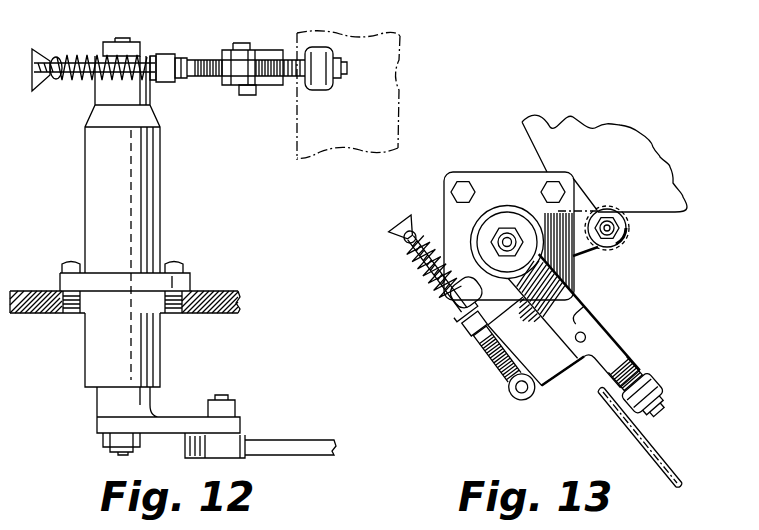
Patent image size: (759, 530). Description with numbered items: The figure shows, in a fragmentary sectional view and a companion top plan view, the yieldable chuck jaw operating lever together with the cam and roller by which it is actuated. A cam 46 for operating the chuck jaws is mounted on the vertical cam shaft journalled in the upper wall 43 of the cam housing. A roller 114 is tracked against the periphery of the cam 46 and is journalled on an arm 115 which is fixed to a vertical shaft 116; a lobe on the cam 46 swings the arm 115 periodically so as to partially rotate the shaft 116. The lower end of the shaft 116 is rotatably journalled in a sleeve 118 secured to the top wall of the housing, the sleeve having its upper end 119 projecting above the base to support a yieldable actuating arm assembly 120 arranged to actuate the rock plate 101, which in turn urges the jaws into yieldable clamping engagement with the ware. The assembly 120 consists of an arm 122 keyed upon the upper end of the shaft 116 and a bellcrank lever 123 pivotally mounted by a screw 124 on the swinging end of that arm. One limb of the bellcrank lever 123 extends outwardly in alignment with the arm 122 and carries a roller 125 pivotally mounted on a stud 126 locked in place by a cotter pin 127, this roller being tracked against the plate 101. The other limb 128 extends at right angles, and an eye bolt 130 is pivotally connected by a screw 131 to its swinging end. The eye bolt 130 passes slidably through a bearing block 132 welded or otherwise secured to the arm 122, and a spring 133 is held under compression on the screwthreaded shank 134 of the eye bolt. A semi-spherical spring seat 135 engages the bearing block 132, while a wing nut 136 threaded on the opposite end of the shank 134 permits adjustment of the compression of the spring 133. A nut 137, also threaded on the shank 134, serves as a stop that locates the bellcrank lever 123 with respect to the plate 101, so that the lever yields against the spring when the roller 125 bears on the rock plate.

In FIG. 12, the upper wall 43 is at (35, 291).
In FIG. 12, the cam 46 is at (290, 447).
In FIG. 13, the cam 46 is at (663, 167).
In FIG. 12, the rock plate 101 is at (400, 95).
In FIG. 13, the rock plate 101 is at (676, 460).
In FIG. 12, the roller 114 is at (233, 450).
In FIG. 13, the roller 114 is at (630, 229).
In FIG. 12, the arm 115 is at (184, 418).
In FIG. 13, the arm 115 is at (592, 250).
In FIG. 12, the vertical shaft 116 is at (121, 41).
In FIG. 13, the vertical shaft 116 is at (505, 232).
In FIG. 12, the sleeve 118 is at (95, 348).
In FIG. 12, the upper end 119 is at (140, 197).
In FIG. 13, the upper end 119 is at (476, 252).
In FIG. 13, the yieldable actuating arm assembly 120 is at (604, 305).
In FIG. 13, the arm 122 is at (590, 318).
In FIG. 12, the bellcrank lever 123 is at (275, 50).
In FIG. 13, the bellcrank lever 123 is at (620, 350).
In FIG. 13, the screw 124 is at (587, 336).
In FIG. 12, the roller 125 is at (318, 83).
In FIG. 13, the roller 125 is at (651, 378).
In FIG. 12, the stud 126 is at (341, 64).
In FIG. 13, the stud 126 is at (652, 405).
In FIG. 12, the cotter pin 127 is at (346, 72).
In FIG. 13, the cotter pin 127 is at (660, 393).
In FIG. 13, the limb 128 is at (546, 356).
In FIG. 12, the eye bolt 130 is at (218, 78).
In FIG. 13, the eye bolt 130 is at (507, 368).
In FIG. 12, the screw 131 is at (243, 43).
In FIG. 13, the screw 131 is at (535, 392).
In FIG. 12, the bearing block 132 is at (166, 83).
In FIG. 13, the bearing block 132 is at (472, 338).
In FIG. 12, the spring 133 is at (78, 58).
In FIG. 13, the spring 133 is at (420, 270).
In FIG. 12, the shank 134 is at (85, 73).
In FIG. 13, the shank 134 is at (443, 292).
In FIG. 12, the semi-spherical spring seat 135 is at (154, 56).
In FIG. 13, the semi-spherical spring seat 135 is at (457, 322).
In FIG. 12, the wing nut 136 is at (48, 56).
In FIG. 13, the wing nut 136 is at (395, 240).
In FIG. 12, the nut 137 is at (182, 57).
In FIG. 13, the nut 137 is at (482, 345).